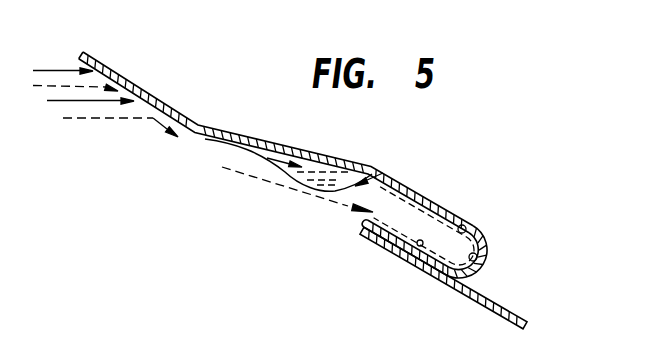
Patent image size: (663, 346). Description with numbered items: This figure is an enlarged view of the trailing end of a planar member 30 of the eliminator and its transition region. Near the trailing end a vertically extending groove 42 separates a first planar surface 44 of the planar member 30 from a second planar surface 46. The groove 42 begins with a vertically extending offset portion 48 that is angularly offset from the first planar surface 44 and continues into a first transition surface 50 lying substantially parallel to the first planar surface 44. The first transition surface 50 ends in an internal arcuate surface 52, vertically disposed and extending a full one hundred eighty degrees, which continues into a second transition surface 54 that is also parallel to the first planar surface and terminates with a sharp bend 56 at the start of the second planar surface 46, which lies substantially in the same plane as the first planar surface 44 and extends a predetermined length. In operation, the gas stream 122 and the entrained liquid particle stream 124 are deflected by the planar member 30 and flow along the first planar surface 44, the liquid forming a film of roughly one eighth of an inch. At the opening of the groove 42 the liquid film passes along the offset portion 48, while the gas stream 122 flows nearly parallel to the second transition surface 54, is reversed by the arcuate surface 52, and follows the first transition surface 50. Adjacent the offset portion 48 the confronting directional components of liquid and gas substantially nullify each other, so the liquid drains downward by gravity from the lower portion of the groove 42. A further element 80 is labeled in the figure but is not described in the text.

The planar member 30 is at (176, 108).
The first planar surface 44 is at (184, 128).
The entrained liquid particle stream 124 is at (58, 70).
The gas stream 122 is at (110, 120).
The offset portion 48 is at (313, 160).
The groove 42 is at (358, 258).
The second transition surface 54 is at (405, 257).
The sharp bend 56 is at (361, 226).
The second planar surface 46 is at (478, 304).
The first transition surface 50 is at (466, 228).
The internal arcuate surface 52 is at (490, 258).
The housing wall 80 is at (105, 338).